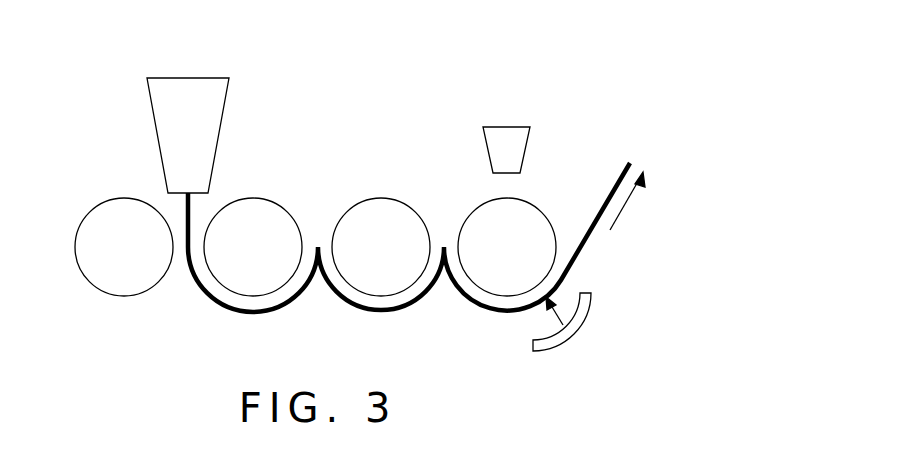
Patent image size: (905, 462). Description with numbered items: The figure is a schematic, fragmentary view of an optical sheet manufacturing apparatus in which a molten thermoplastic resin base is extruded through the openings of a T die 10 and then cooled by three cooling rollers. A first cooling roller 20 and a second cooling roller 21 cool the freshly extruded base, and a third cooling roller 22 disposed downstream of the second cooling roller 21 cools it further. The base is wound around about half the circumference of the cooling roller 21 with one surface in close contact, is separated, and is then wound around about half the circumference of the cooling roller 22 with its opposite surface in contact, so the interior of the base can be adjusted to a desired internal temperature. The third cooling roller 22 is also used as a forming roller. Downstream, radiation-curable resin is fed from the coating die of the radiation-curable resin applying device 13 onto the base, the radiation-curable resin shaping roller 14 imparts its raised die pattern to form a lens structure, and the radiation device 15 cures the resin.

The T die 10 is at (189, 85).
The radiation-curable resin applying device 13 is at (527, 140).
The radiation-curable resin shaping roller 14 is at (540, 222).
The radiation device 15 is at (580, 317).
The first cooling roller 20 is at (112, 204).
The second cooling roller 21 is at (256, 212).
The third cooling roller 22 is at (382, 285).